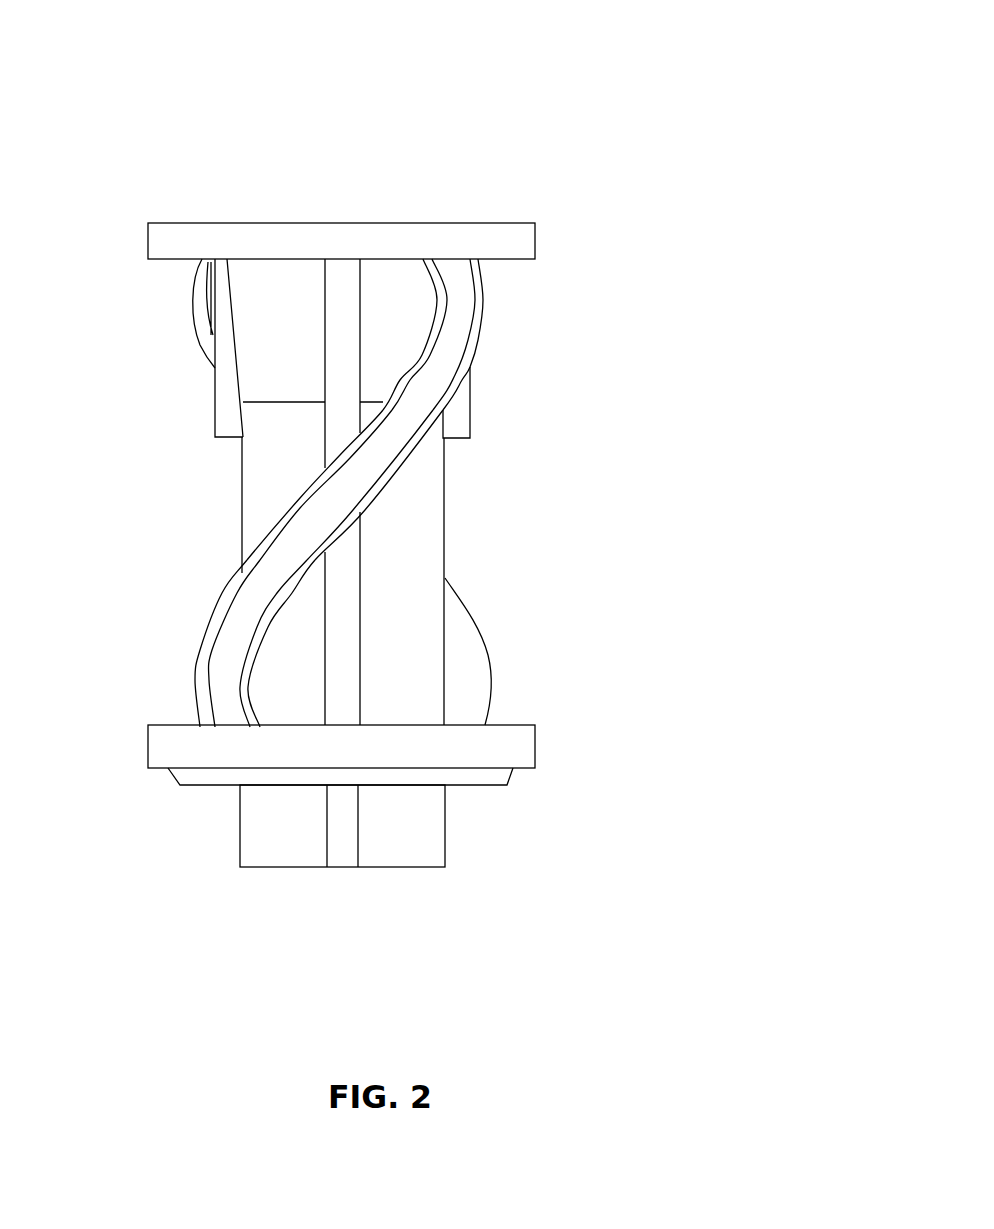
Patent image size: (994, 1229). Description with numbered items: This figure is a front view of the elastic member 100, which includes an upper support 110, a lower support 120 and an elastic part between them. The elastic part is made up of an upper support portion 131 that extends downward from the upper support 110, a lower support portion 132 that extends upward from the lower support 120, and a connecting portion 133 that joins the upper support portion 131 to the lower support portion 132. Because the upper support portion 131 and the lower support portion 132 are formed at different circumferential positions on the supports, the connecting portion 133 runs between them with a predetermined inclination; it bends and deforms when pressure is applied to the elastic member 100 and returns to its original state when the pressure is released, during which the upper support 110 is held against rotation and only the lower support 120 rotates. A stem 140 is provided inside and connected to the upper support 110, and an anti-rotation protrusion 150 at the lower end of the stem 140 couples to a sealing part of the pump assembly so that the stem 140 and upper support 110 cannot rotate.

The elastic member 100 is at (684, 40).
The upper support 110 is at (395, 223).
The lower support 120 is at (152, 757).
The upper support portion 131 is at (460, 283).
The lower support portion 132 is at (222, 688).
The connecting portion 133 is at (307, 522).
The stem 140 is at (445, 838).
The anti-rotation protrusion 150 is at (347, 860).